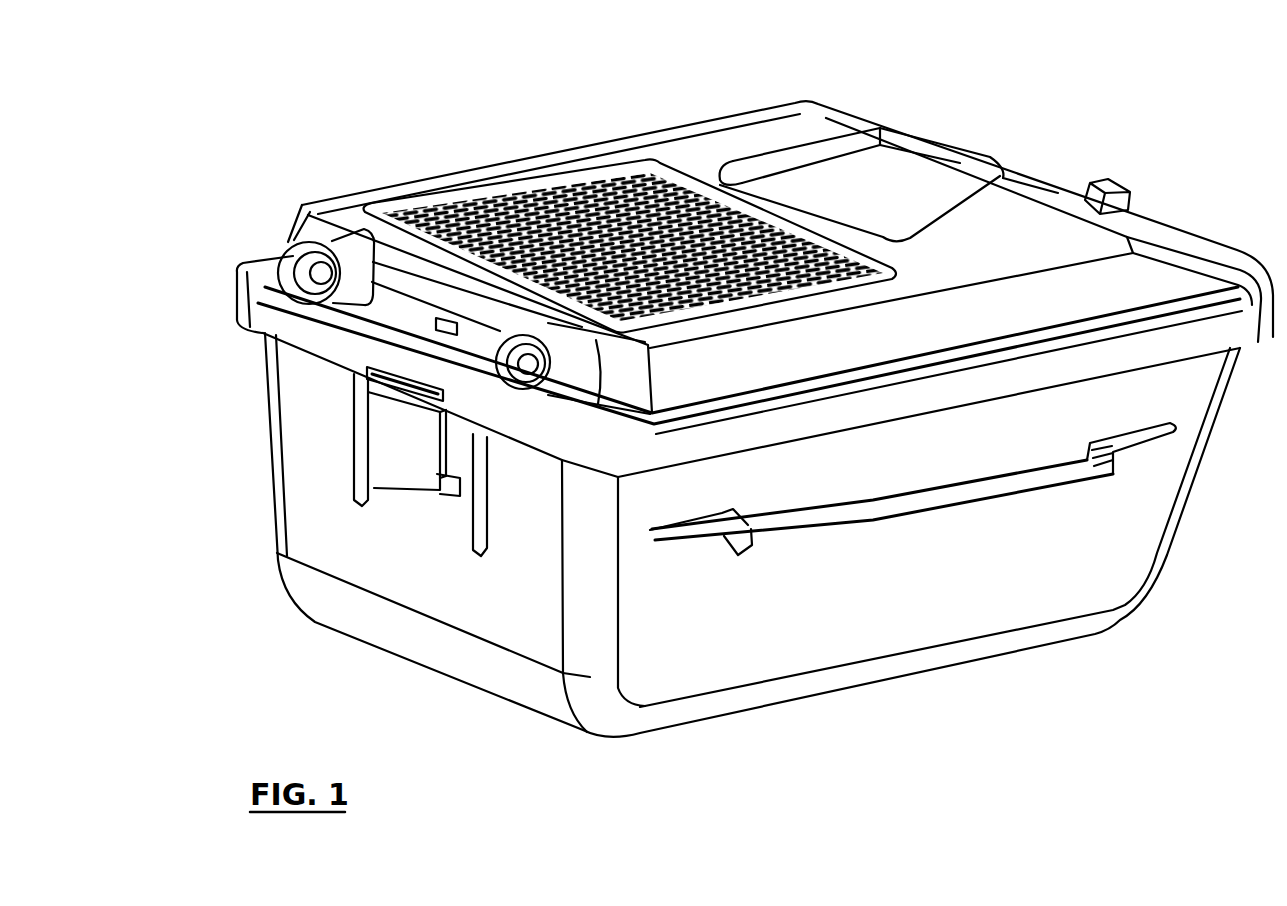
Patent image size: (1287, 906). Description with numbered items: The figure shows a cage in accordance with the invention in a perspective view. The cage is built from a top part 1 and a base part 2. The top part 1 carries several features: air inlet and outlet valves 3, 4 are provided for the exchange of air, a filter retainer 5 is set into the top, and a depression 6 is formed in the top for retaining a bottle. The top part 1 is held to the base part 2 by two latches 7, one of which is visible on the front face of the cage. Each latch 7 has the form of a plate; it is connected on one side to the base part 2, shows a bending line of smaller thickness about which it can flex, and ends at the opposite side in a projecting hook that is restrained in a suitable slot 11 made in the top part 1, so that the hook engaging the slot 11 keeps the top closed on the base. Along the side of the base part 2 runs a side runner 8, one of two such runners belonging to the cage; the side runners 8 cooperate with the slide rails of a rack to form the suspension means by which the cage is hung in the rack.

The top part 1 is at (1190, 272).
The base part 2 is at (1130, 527).
The air inlet valve 3 is at (297, 263).
The air outlet valve 4 is at (555, 435).
The filter retainer 5 is at (549, 224).
The depression 6 is at (927, 180).
The latch 7 is at (393, 457).
The side runner 8 is at (940, 497).
The slot 11 is at (373, 370).